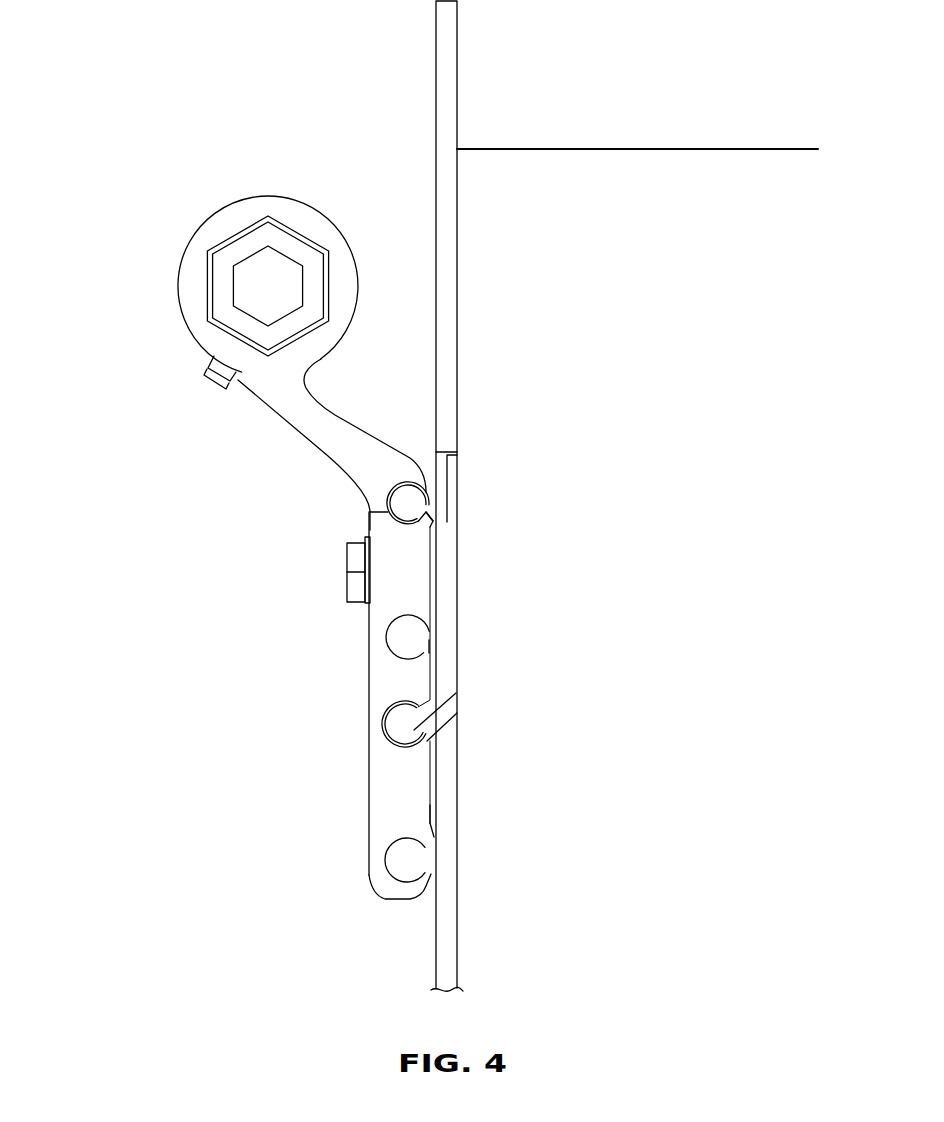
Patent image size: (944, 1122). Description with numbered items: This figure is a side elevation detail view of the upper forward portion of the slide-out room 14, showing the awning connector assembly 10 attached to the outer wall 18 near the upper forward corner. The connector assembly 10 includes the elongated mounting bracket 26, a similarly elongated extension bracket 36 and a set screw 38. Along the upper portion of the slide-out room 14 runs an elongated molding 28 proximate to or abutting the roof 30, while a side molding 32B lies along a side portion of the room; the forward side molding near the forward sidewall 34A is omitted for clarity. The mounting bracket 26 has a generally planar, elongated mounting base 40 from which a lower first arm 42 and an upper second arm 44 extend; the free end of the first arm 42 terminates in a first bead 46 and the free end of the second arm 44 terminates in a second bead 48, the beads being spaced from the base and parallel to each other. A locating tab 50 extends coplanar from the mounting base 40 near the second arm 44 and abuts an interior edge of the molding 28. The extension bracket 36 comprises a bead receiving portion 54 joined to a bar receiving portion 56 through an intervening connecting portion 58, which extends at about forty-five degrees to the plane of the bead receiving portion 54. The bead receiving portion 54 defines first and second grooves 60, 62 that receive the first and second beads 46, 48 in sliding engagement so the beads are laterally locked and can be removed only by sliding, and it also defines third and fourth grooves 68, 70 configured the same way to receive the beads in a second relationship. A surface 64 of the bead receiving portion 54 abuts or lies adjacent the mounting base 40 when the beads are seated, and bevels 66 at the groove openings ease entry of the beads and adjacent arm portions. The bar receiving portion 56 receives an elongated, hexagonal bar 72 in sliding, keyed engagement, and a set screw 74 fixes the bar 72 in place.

The awning connector assembly 10 is at (527, 682).
The slide-out room 14 is at (737, 517).
The outer wall 18 is at (450, 947).
The mounting bracket 26 is at (446, 652).
The molding 28 is at (447, 47).
The roof 30 is at (703, 148).
The side molding 32B is at (449, 866).
The forward sidewall 34A is at (665, 362).
The extension bracket 36 is at (382, 808).
The set screw 38 is at (347, 565).
The mounting base 40 is at (440, 588).
The first arm 42 is at (447, 720).
The second arm 44 is at (433, 514).
The first bead 46 is at (440, 745).
The second bead 48 is at (410, 498).
The locating tab 50 is at (452, 485).
The bead receiving portion 54 is at (348, 786).
The bar receiving portion 56 is at (253, 207).
The connecting portion 58 is at (352, 432).
The first groove 60 is at (385, 727).
The second groove 62 is at (370, 508).
The surface 64 is at (432, 812).
The bevel 66 is at (435, 520).
The third groove 68 is at (405, 868).
The fourth groove 70 is at (400, 637).
The bar 72 is at (225, 265).
The set screw 74 is at (208, 372).